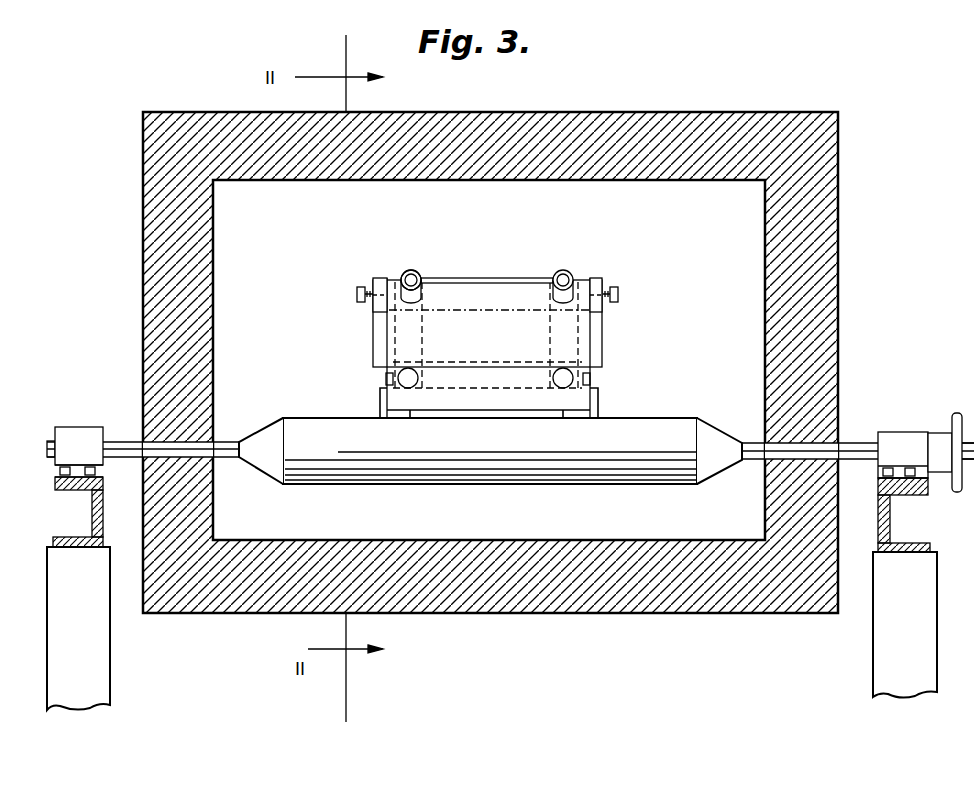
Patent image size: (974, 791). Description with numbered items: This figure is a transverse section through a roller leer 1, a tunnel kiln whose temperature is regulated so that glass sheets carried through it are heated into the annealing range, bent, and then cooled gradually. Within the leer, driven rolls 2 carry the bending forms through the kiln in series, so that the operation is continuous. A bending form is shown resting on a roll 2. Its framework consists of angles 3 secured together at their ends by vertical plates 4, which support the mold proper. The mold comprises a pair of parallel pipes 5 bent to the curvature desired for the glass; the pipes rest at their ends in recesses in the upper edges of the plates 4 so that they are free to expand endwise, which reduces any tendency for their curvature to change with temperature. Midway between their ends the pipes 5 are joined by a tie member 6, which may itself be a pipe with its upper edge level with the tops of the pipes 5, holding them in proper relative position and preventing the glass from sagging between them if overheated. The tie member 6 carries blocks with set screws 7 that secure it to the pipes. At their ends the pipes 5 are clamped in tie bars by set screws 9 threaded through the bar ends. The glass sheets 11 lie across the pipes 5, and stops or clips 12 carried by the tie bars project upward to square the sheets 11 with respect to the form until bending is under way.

The roller leer 1 is at (222, 210).
The rolls 2 is at (330, 435).
The angles 3 is at (380, 412).
The vertical plates 4 is at (582, 337).
The pipes 5 is at (570, 272).
The tie member 6 is at (414, 270).
The set screws 7 is at (593, 378).
The set screws 9 is at (618, 292).
The glass sheets 11 is at (483, 278).
The stops or clips 12 is at (392, 276).